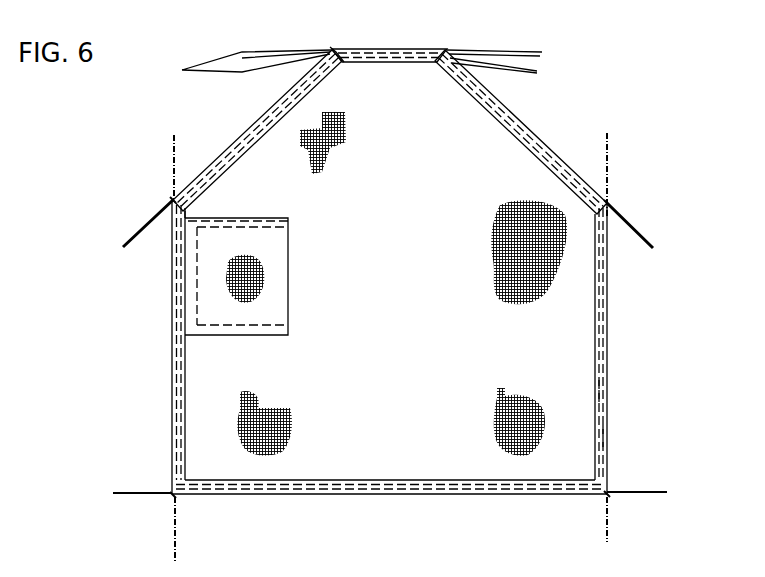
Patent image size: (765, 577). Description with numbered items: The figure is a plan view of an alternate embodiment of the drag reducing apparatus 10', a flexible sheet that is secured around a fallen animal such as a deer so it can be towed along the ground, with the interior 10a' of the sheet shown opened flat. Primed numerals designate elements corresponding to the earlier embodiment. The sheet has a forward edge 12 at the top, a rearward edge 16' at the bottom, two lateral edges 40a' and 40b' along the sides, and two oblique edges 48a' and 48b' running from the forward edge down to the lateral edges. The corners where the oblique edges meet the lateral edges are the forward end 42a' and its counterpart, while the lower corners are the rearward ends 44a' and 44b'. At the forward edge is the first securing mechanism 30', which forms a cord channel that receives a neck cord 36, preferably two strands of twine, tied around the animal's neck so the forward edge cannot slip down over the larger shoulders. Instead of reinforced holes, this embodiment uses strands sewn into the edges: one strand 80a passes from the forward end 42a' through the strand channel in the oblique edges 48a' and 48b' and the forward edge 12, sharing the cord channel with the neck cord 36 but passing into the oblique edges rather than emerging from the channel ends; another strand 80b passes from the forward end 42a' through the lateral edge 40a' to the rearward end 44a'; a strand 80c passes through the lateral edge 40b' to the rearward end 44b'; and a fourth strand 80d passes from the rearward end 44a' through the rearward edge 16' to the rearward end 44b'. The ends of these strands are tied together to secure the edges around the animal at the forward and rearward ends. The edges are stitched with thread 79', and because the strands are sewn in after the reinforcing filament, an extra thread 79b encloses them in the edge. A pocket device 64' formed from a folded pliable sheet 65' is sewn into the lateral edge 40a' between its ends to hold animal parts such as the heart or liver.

The drag reducing apparatus 10' is at (383, 291).
The interior of building 10a' is at (444, 276).
The forward edge 12 is at (380, 47).
The rearward edge 16' is at (389, 510).
The first securing mechanism 30' is at (317, 36).
The neck cord 36 is at (348, 68).
The lateral edge 40a' is at (131, 347).
The lateral edge 40b' is at (638, 348).
The forward end 42a' is at (122, 199).
The rearward end 44a' is at (132, 523).
The rearward end 44b' is at (650, 385).
The oblique edge 48a' is at (257, 134).
The oblique edge 48b' is at (521, 132).
The pocket device 64' is at (287, 269).
The pliable sheet 65' is at (268, 276).
The wall panel layer 79' is at (637, 392).
The extra thread 79b is at (602, 438).
The strand 80a is at (125, 247).
The strand 80b is at (173, 155).
The strand 80c is at (607, 162).
The strand 80d is at (137, 492).